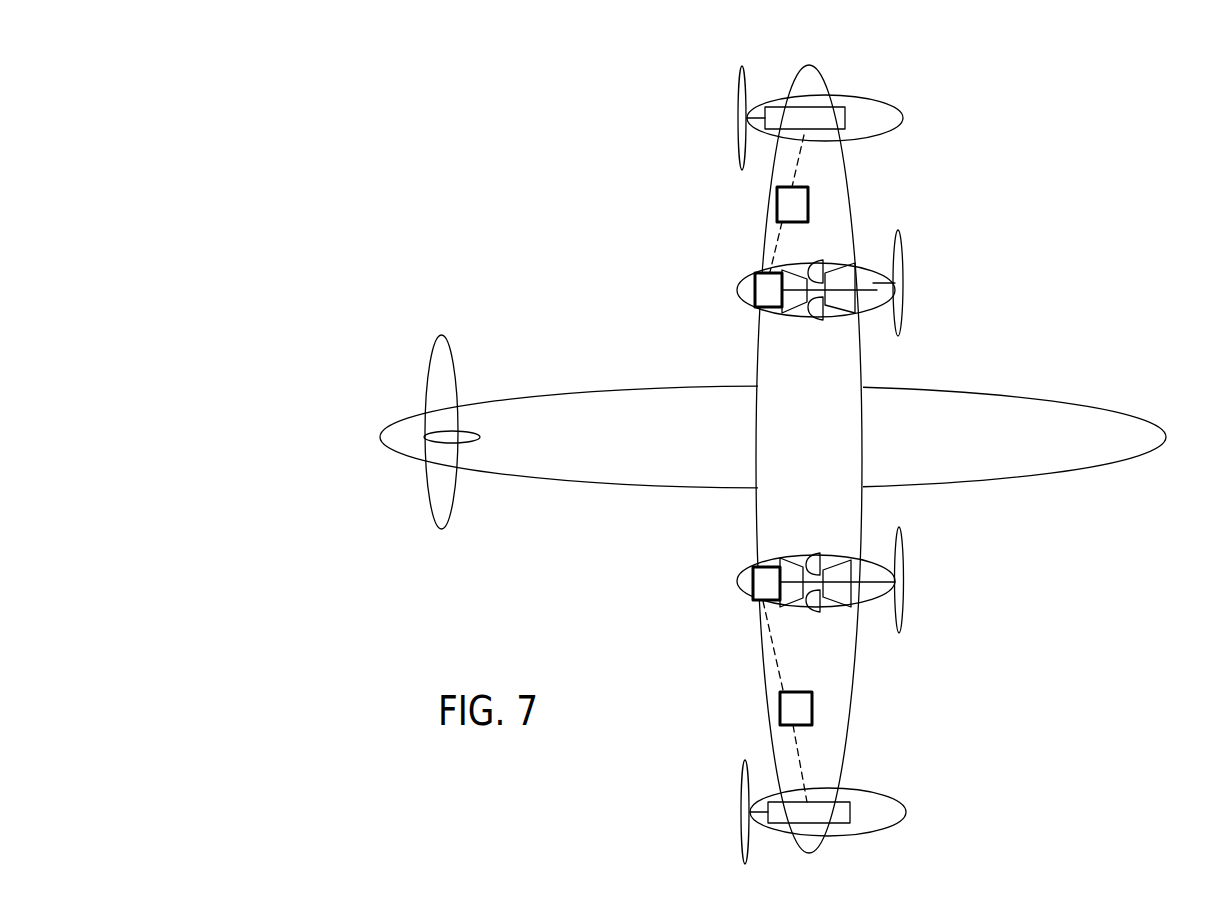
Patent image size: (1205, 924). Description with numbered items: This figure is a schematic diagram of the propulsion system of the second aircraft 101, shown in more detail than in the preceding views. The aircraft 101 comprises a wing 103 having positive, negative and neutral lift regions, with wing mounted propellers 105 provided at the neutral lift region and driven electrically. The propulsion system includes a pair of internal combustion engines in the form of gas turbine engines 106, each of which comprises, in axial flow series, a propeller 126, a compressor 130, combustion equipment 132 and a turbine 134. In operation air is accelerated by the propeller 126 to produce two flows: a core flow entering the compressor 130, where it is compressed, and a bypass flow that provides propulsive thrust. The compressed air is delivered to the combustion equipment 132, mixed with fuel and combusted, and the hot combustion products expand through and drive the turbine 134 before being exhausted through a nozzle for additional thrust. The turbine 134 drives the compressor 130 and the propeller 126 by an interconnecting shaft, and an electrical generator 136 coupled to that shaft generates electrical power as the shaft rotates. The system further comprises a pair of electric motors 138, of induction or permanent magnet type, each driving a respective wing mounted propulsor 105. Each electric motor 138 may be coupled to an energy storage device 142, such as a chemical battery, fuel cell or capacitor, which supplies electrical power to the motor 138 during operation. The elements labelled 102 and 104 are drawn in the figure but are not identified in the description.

The second aircraft 101 is at (1060, 231).
The wing 102 is at (606, 386).
The wing 103 is at (770, 729).
The wing tip rotor 104 is at (423, 502).
The wing mounted propeller 105 is at (740, 67).
The gas turbine engine 106 is at (880, 331).
The propeller 126 is at (900, 527).
The compressor 130 is at (837, 605).
The combustion equipment 132 is at (820, 617).
The turbine 134 is at (793, 560).
The electrical generator 136 is at (766, 565).
The electric motor 138 is at (803, 108).
The energy storage device 142 is at (808, 203).